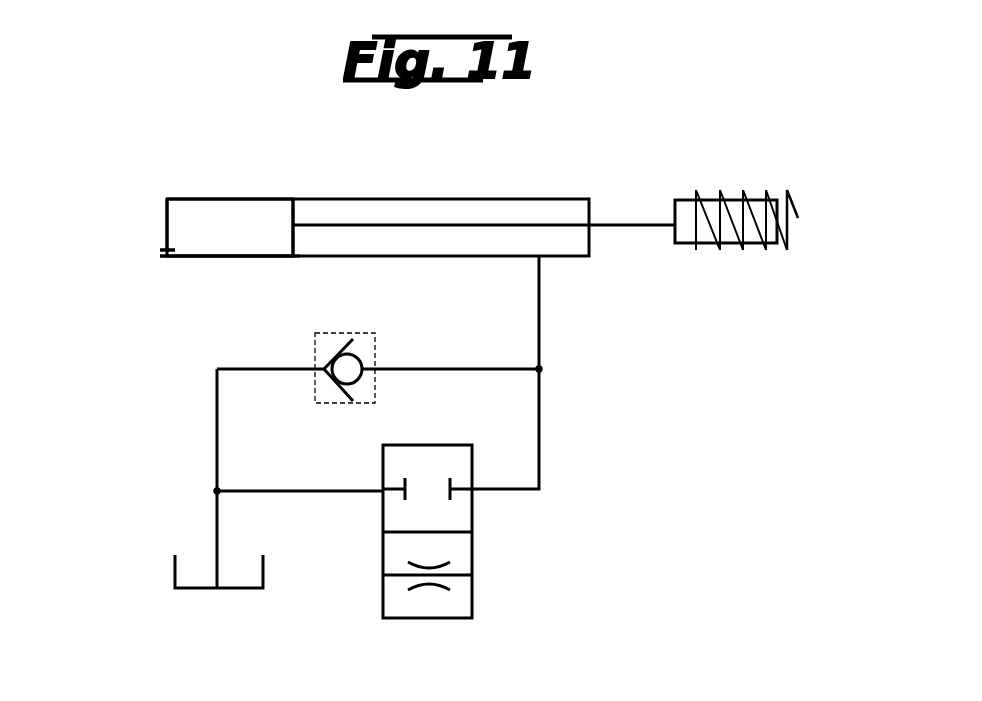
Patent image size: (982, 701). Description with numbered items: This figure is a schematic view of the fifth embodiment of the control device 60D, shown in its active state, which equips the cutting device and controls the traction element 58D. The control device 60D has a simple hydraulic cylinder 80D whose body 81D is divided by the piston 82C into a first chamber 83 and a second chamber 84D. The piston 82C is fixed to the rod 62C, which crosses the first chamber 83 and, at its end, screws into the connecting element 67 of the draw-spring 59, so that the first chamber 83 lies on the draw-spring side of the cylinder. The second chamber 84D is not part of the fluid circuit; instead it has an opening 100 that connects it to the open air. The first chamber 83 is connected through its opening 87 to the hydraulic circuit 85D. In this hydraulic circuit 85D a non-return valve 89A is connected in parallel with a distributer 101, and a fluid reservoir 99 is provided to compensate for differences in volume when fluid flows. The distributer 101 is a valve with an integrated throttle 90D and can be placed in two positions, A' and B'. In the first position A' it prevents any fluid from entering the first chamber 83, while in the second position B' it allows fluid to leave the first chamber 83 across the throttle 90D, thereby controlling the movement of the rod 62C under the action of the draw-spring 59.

The hydraulic cylinder 80D is at (455, 168).
The body 81D is at (252, 198).
The piston 82C is at (293, 214).
The first chamber 83 is at (508, 207).
The second chamber 84D is at (243, 258).
The opening 100 is at (162, 256).
The control device 60D is at (190, 262).
The rod 62C is at (630, 227).
The traction element 58D is at (708, 177).
The connecting element 67 is at (752, 250).
The draw-spring 59 is at (790, 194).
The opening 87 is at (536, 258).
The non-return valve 89A is at (350, 356).
The hydraulic circuit 85D is at (217, 463).
The fluid reservoir 99 is at (172, 565).
The distributer 101 is at (383, 600).
The throttle 90D is at (440, 570).
The first position A' is at (386, 485).
The second position B' is at (472, 600).